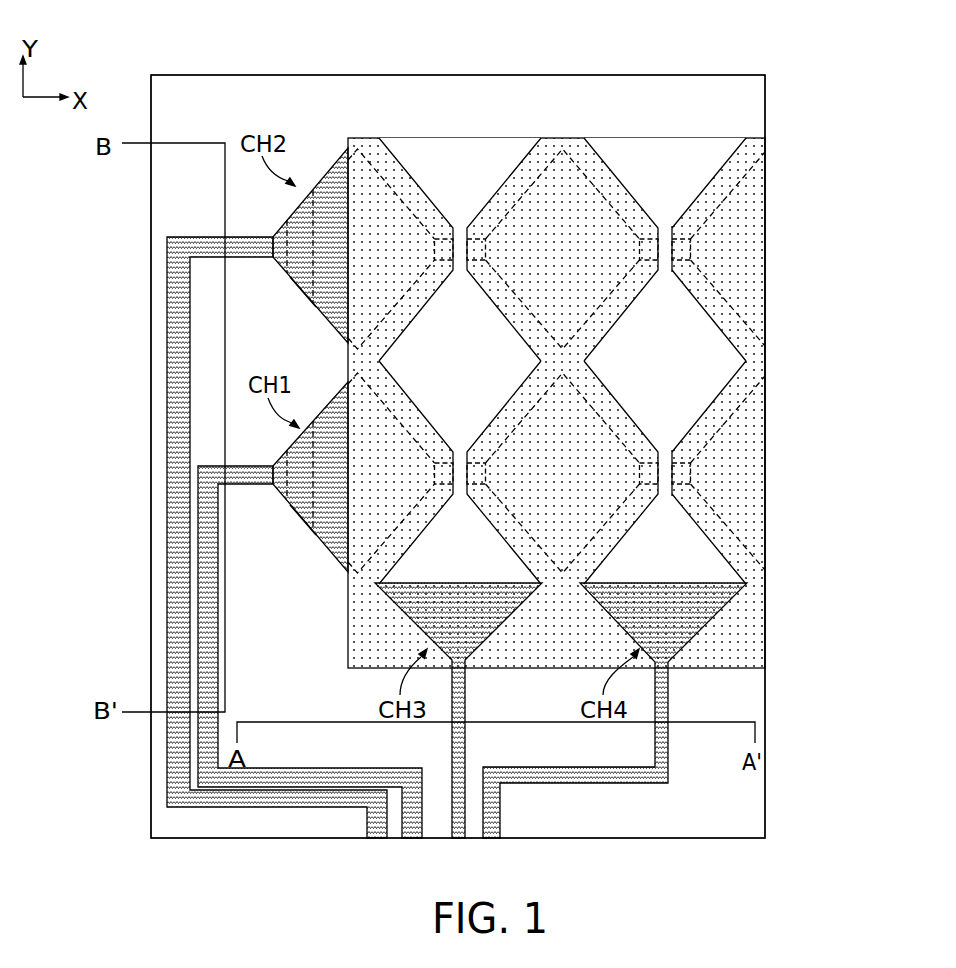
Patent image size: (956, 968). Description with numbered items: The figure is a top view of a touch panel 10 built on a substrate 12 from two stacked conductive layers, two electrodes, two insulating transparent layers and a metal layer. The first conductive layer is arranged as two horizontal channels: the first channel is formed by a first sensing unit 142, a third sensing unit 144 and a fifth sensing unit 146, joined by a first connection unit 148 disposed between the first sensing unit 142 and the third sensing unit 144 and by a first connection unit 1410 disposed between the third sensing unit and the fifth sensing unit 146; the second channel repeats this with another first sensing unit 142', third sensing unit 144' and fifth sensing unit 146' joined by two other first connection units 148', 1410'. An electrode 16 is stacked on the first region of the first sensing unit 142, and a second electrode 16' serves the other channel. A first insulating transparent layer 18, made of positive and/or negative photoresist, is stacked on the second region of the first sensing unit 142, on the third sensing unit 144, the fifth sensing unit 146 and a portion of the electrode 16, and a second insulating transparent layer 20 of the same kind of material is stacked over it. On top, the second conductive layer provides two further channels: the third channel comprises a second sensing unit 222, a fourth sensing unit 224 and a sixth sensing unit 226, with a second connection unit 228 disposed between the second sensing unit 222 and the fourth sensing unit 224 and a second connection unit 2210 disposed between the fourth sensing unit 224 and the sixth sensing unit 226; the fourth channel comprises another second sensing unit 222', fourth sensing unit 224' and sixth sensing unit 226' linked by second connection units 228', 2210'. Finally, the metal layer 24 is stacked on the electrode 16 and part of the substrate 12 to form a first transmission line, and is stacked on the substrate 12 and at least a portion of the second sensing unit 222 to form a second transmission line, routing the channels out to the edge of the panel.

The touch panel 10 is at (141, 25).
The substrate 12 is at (758, 95).
The second insulating transparent layer 20 is at (752, 608).
The metal layer 24 is at (262, 237).
The first insulating transparent layer 18 is at (337, 172).
The electrode 16 is at (293, 533).
The electrode 16' is at (292, 304).
The first sensing unit 142 is at (405, 472).
The first sensing unit 142' is at (404, 249).
The third sensing unit 144 is at (562, 472).
The third sensing unit 144' is at (562, 249).
The fifth sensing unit 146 is at (713, 472).
The fifth sensing unit 146' is at (712, 249).
The second sensing unit 222 is at (460, 518).
The second sensing unit 222' is at (665, 518).
The fourth sensing unit 224 is at (460, 361).
The fourth sensing unit 224' is at (665, 361).
The sixth sensing unit 226 is at (460, 204).
The sixth sensing unit 226' is at (665, 204).
The first connection unit 148 is at (370, 415).
The first connection unit 148' is at (400, 172).
The second connection unit 228 is at (387, 533).
The second connection unit 228' is at (735, 460).
The second connection unit 2210 is at (490, 180).
The second connection unit 2210' is at (749, 233).
The first connection unit 1410 is at (765, 410).
The first connection unit 1410' is at (766, 182).